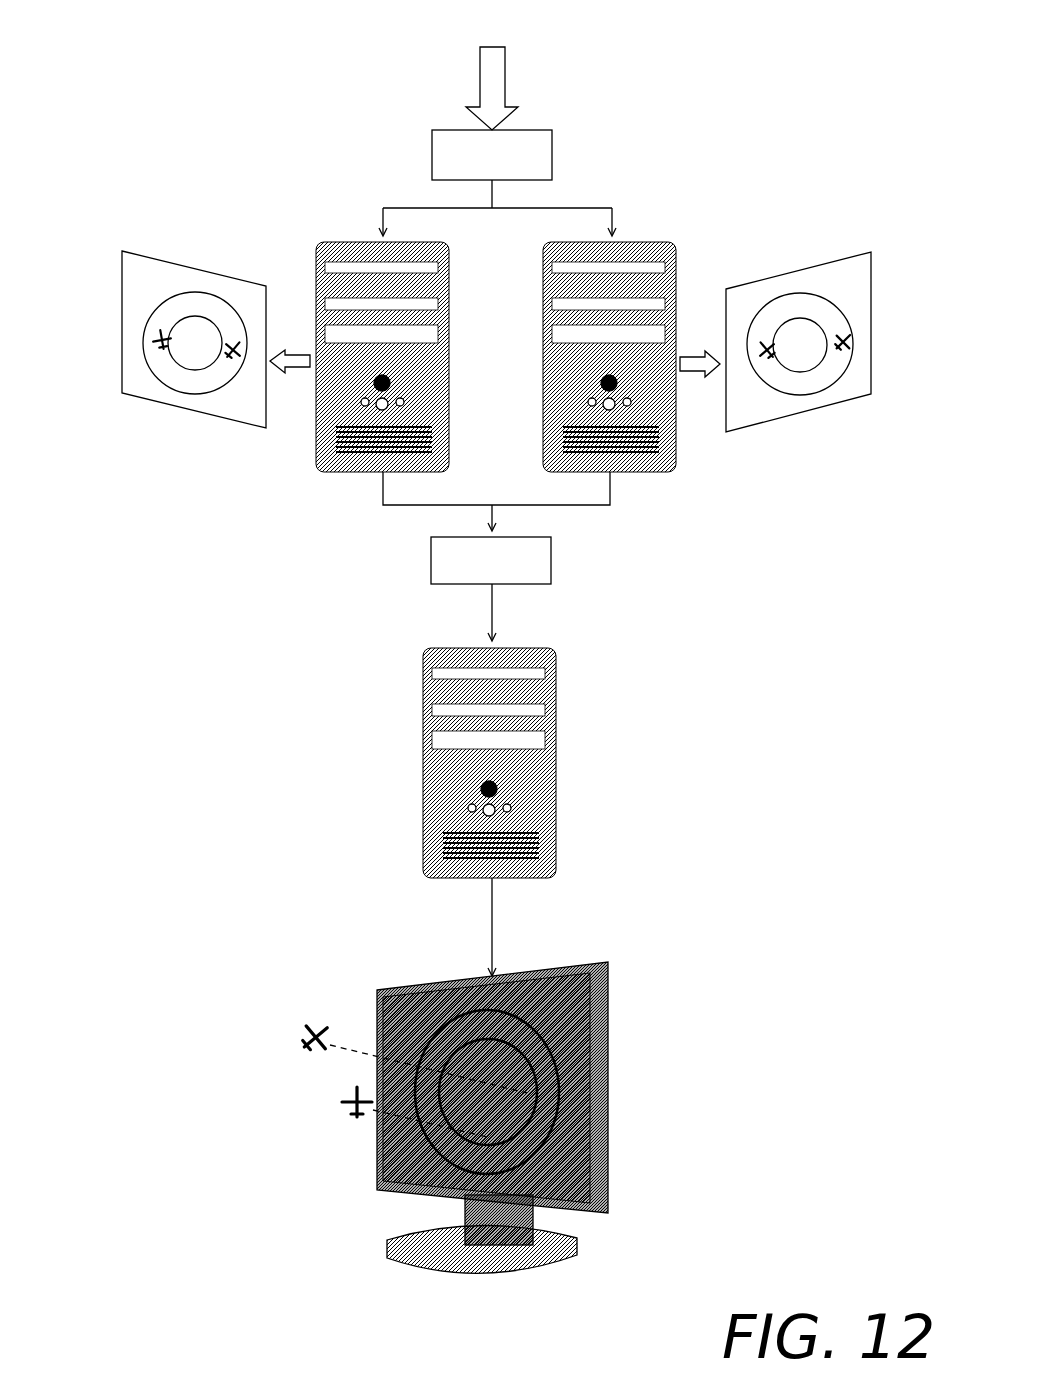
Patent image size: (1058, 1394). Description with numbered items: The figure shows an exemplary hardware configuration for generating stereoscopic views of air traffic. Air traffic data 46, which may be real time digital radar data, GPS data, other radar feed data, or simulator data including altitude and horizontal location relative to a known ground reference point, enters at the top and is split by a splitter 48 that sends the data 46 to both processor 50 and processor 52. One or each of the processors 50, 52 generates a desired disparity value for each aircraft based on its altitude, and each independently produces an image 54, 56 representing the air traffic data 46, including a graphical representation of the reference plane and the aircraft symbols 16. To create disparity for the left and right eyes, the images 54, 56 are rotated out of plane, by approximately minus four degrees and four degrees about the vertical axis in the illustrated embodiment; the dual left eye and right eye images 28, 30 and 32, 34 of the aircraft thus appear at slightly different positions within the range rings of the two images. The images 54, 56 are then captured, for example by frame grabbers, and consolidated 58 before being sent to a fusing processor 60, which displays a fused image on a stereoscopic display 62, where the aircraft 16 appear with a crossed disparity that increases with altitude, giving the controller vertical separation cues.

The aircraft symbols 16 is at (322, 1108).
The left eye image 28 is at (155, 362).
The right eye image 30 is at (763, 372).
The left eye image 32 is at (228, 367).
The right eye image 34 is at (840, 357).
The air traffic data 46 is at (480, 77).
The splitter 48 is at (552, 155).
The processor 50 is at (316, 268).
The processor 52 is at (677, 268).
The left eye image 54 is at (122, 292).
The right eye image 56 is at (871, 300).
The consolidation 58 is at (551, 558).
The fusing processor 60 is at (423, 710).
The stereoscopic display 62 is at (603, 1083).